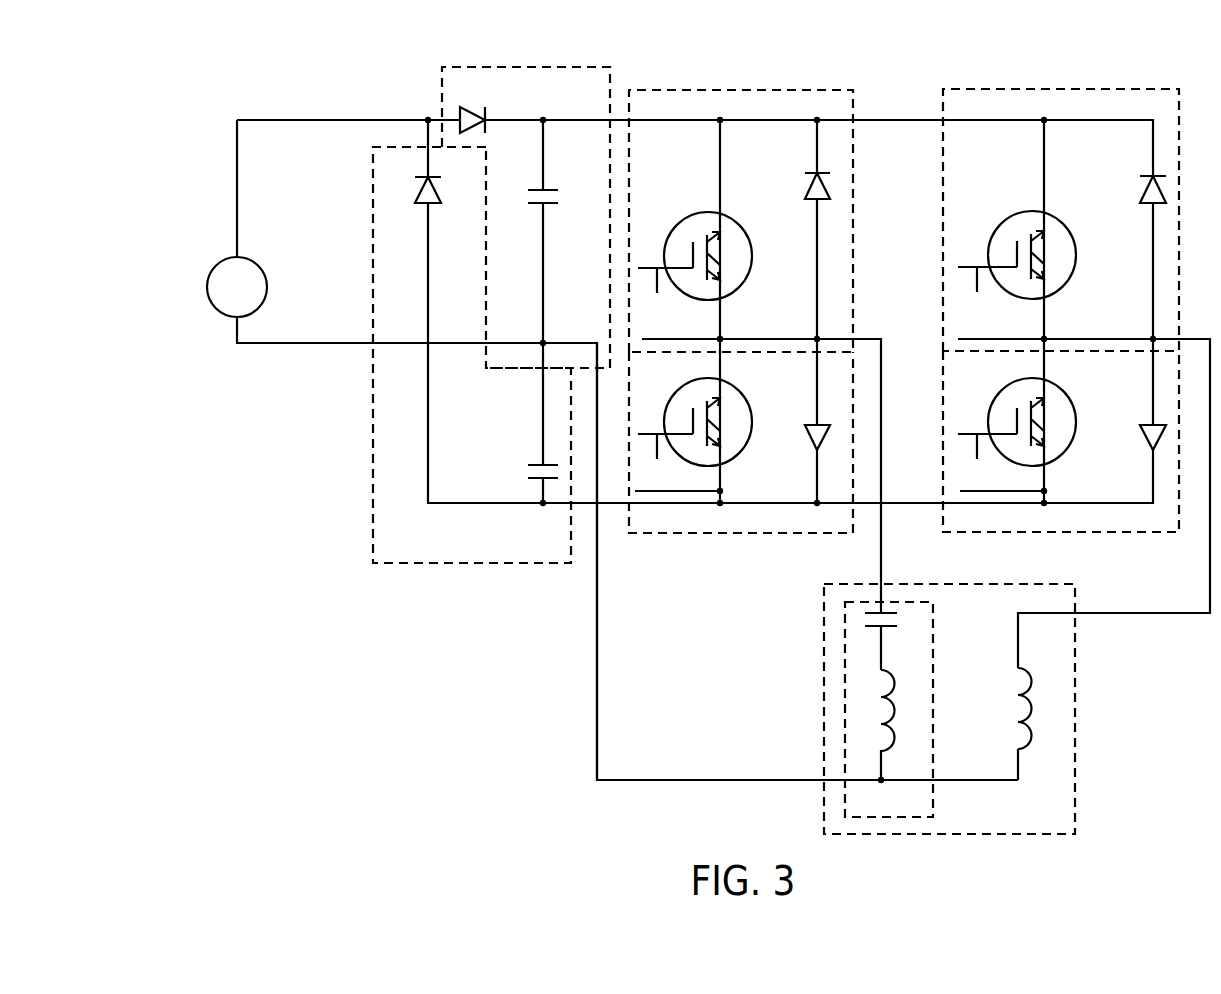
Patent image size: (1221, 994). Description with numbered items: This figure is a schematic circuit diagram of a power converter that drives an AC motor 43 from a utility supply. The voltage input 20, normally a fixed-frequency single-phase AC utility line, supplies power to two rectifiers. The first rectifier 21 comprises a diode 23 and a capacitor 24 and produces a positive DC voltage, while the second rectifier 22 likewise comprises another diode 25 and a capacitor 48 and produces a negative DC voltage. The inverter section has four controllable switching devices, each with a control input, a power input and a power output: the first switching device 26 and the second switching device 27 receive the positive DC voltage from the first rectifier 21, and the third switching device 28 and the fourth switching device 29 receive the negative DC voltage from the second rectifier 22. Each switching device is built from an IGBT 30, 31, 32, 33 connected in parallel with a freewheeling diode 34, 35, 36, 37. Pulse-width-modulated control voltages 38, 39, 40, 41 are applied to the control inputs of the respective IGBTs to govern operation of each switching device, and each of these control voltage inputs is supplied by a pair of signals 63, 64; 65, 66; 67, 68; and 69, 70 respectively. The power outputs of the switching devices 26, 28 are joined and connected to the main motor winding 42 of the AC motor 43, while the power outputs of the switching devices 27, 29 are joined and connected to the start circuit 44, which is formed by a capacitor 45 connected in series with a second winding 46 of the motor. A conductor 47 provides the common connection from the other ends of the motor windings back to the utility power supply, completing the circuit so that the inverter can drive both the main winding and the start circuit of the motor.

The voltage input 20 is at (247, 258).
The first rectifier 21 is at (527, 67).
The second rectifier 22 is at (373, 413).
The diode 23 is at (478, 99).
The capacitor 24 is at (551, 204).
The diode 25 is at (433, 204).
The first switching device 26 is at (990, 89).
The second switching device 27 is at (677, 90).
The third switching device 28 is at (1107, 533).
The fourth switching device 29 is at (713, 533).
The IGBT 30 is at (1074, 255).
The IGBT 31 is at (752, 256).
The IGBT 32 is at (1075, 422).
The IGBT 33 is at (752, 422).
The freewheeling diode 34 is at (1141, 196).
The freewheeling diode 35 is at (806, 182).
The freewheeling diode 36 is at (1148, 451).
The freewheeling diode 37 is at (813, 452).
The pulse-width-modulated control voltage 38 is at (1010, 339).
The pulse-width-modulated control voltage 39 is at (684, 339).
The pulse-width-modulated control voltage 40 is at (1020, 491).
The pulse-width-modulated control voltage 41 is at (700, 491).
The main motor winding 42 is at (1018, 705).
The AC motor 43 is at (1015, 834).
The start circuit 44 is at (935, 795).
The capacitor 45 is at (888, 627).
The second winding 46 is at (895, 690).
The conductor 47 is at (597, 628).
The capacitor 48 is at (530, 465).
The signal 63 is at (957, 267).
The signal 64 is at (958, 339).
The signal 65 is at (662, 268).
The signal 66 is at (688, 340).
The signal 67 is at (958, 434).
The signal 68 is at (960, 491).
The signal 69 is at (645, 434).
The signal 70 is at (648, 491).